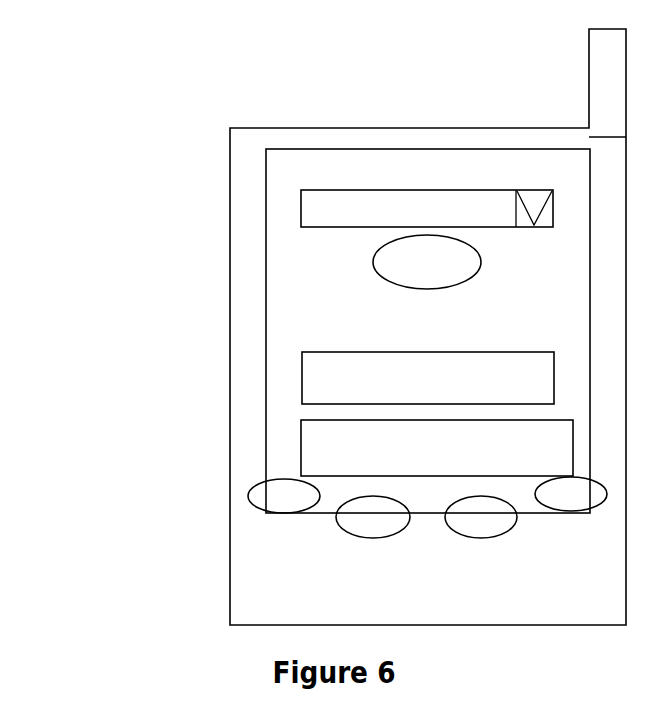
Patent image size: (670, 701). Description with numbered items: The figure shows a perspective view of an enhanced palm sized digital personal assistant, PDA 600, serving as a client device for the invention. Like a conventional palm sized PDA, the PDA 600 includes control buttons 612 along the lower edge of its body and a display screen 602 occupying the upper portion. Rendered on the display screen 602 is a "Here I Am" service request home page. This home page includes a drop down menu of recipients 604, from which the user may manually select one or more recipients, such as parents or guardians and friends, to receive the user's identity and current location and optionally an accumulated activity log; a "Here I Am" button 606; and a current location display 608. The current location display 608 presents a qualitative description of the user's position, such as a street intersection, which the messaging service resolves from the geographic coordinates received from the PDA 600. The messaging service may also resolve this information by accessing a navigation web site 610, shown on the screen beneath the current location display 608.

The palm sized digital personal assistant (PDA) 600 is at (80, 81).
The display screen 602 is at (371, 180).
The drop down menu of recipients 604 is at (300, 207).
The "Here I Am" button 606 is at (373, 268).
The current location display 608 is at (283, 343).
The navigation web site 610 is at (283, 438).
The control buttons 612 is at (353, 502).